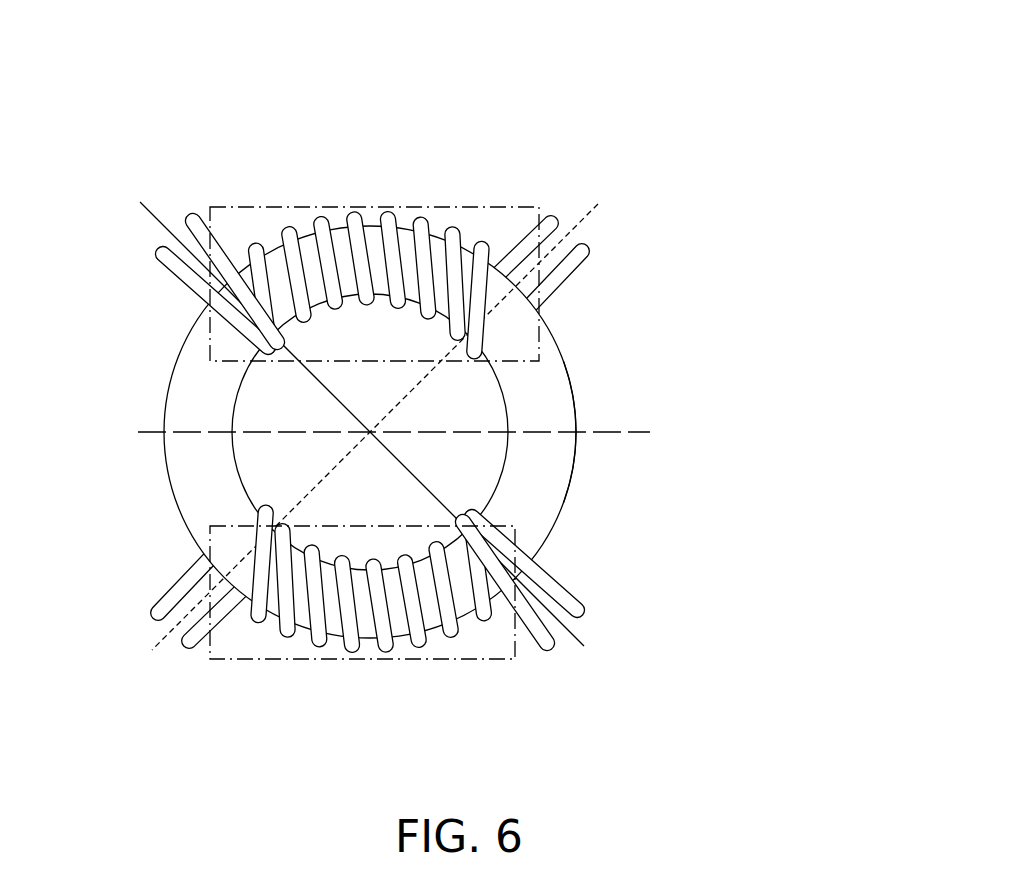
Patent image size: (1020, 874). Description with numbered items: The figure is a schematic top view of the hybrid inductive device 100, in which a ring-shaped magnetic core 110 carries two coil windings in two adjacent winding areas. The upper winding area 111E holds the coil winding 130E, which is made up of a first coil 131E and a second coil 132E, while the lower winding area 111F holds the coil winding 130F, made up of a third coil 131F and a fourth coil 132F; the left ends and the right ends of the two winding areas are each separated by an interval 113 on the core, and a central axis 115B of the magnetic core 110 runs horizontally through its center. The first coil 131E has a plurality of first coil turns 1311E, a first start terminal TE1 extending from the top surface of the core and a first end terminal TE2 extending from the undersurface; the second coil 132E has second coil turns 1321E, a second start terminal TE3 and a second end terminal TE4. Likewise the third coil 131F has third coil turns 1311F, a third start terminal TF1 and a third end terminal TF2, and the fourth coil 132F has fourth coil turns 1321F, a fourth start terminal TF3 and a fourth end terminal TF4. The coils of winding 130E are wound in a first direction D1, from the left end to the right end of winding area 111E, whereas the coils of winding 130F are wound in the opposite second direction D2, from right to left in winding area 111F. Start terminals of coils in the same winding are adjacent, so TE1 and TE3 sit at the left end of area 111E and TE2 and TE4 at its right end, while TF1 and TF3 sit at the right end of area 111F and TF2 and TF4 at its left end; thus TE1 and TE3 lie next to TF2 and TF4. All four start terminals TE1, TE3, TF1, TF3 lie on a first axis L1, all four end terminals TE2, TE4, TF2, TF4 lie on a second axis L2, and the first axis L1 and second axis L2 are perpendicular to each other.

The hybrid inductive device 100 is at (63, 96).
The magnetic core 110 is at (574, 395).
The interval 113 is at (562, 456).
The central axis 115B is at (360, 433).
The first axis L1 is at (354, 409).
The second axis L2 is at (387, 411).
The first direction D1 is at (395, 172).
The second direction D2 is at (403, 728).
The winding area 111E is at (448, 206).
The winding area 111F is at (288, 660).
The coil winding 130E is at (755, 227).
The first coil 131E is at (841, 192).
The second coil 132E is at (841, 305).
The first coil turns 1311E is at (446, 341).
The second coil turns 1321E is at (470, 358).
The first start terminal TE1 is at (157, 251).
The first end terminal TE2 is at (552, 216).
The second start terminal TE3 is at (192, 214).
The second end terminal TE4 is at (590, 250).
The coil winding 130F is at (755, 527).
The third coil 131F is at (841, 492).
The fourth coil 132F is at (841, 605).
The third coil turns 1311F is at (275, 510).
The fourth coil turns 1321F is at (300, 522).
The third start terminal TF1 is at (548, 652).
The third end terminal TF2 is at (155, 614).
The fourth start terminal TF3 is at (584, 616).
The fourth end terminal TF4 is at (189, 650).